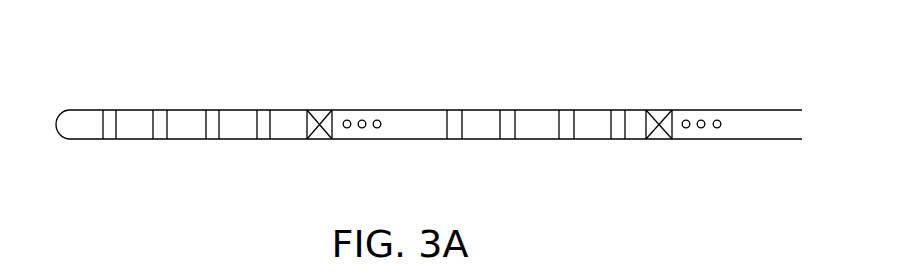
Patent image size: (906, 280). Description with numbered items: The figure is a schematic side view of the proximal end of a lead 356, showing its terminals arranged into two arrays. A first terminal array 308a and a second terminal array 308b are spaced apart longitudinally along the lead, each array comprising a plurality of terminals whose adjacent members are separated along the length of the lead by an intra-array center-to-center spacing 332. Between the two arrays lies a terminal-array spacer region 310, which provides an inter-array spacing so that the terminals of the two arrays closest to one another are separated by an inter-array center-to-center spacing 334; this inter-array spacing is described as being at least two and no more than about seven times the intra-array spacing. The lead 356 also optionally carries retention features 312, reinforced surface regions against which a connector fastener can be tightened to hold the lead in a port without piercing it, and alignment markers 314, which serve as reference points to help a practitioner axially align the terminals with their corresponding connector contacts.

The terminal-array spacer region 310 is at (418, 110).
The lead 356 is at (68, 108).
The first terminal array 308a is at (443, 102).
The second terminal array 308b is at (93, 102).
The retention feature 312 is at (320, 108).
The alignment marker 314 is at (338, 108).
The inter-array center-to-center spacing 334 is at (263, 146).
The intra-array center-to-center spacing 332 is at (565, 147).